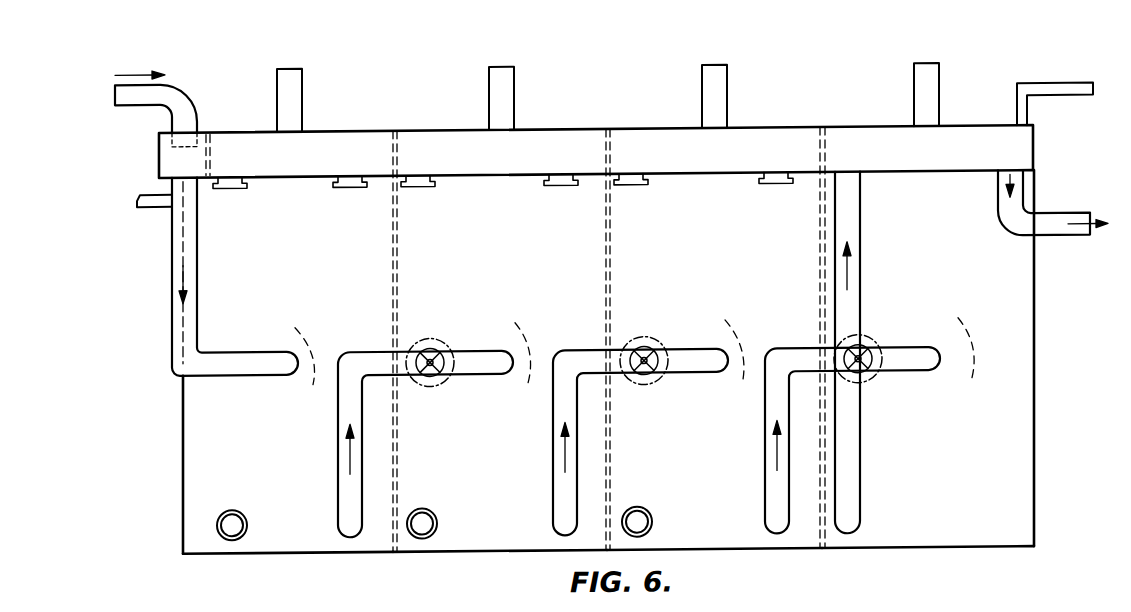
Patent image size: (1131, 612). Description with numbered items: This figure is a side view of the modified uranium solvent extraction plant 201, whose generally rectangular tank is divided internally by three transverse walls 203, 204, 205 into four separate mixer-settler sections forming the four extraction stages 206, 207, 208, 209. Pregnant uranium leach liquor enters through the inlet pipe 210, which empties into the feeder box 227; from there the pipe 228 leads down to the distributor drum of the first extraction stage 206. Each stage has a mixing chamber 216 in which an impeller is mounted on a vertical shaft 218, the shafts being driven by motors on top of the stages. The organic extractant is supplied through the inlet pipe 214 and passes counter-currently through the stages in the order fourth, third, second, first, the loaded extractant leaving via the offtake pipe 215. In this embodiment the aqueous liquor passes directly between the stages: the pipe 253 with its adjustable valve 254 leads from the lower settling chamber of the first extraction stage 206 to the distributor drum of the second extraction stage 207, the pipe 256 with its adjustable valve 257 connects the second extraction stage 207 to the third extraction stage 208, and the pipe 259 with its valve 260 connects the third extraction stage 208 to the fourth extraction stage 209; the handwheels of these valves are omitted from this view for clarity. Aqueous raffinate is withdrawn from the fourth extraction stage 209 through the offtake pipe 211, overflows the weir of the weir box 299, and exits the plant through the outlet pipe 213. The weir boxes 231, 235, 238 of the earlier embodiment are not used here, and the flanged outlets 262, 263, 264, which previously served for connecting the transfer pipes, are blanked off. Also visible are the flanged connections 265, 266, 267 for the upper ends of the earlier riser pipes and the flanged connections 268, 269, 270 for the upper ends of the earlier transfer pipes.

The uranium solvent extraction plant 201 is at (183, 441).
The transverse wall 203 is at (392, 275).
The transverse wall 204 is at (606, 277).
The transverse wall 205 is at (820, 279).
The first extraction stage 206 is at (293, 532).
The second extraction stage 207 is at (502, 529).
The third extraction stage 208 is at (722, 533).
The fourth extraction stage 209 is at (932, 523).
The inlet pipe 210 is at (168, 91).
The offtake pipe 211 is at (848, 415).
The outlet pipe 213 is at (1062, 226).
The inlet pipe 214 is at (1045, 94).
The offtake pipe 215 is at (168, 186).
The mixing chamber 216 is at (645, 366).
The vertical shaft 218 is at (292, 87).
The feeder box 227 is at (172, 162).
The pipe 228 is at (175, 284).
The weir box 231 is at (335, 140).
The weir box 235 is at (548, 140).
The weir box 238 is at (648, 138).
The pipe 253 is at (340, 440).
The adjustable valve 254 is at (433, 354).
The pipe 256 is at (555, 440).
The adjustable valve 257 is at (644, 350).
The pipe 259 is at (767, 436).
The valve 260 is at (862, 352).
The flanged outlet 262 is at (245, 514).
The flanged outlet 263 is at (436, 511).
The flanged outlet 264 is at (646, 516).
The flanged connection 265 is at (227, 189).
The flanged connection 266 is at (417, 188).
The flanged connection 267 is at (632, 190).
The flanged connection 268 is at (347, 190).
The flanged connection 269 is at (560, 190).
The flanged connection 270 is at (770, 190).
The weir box 299 is at (857, 140).